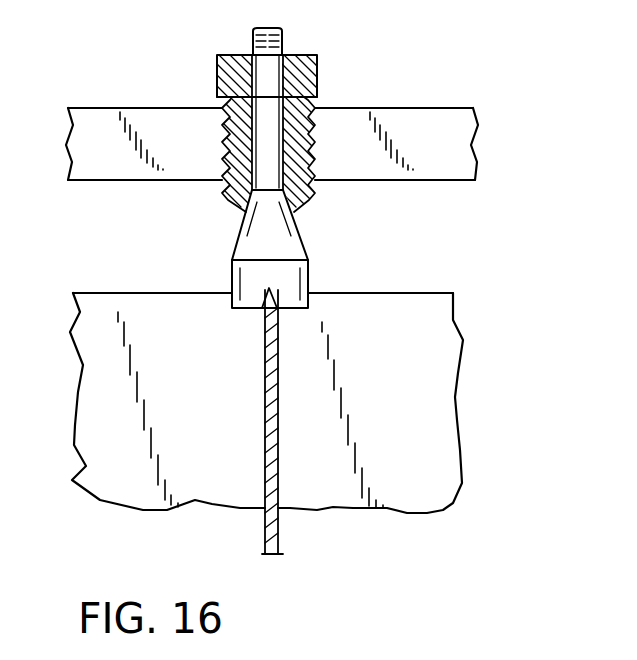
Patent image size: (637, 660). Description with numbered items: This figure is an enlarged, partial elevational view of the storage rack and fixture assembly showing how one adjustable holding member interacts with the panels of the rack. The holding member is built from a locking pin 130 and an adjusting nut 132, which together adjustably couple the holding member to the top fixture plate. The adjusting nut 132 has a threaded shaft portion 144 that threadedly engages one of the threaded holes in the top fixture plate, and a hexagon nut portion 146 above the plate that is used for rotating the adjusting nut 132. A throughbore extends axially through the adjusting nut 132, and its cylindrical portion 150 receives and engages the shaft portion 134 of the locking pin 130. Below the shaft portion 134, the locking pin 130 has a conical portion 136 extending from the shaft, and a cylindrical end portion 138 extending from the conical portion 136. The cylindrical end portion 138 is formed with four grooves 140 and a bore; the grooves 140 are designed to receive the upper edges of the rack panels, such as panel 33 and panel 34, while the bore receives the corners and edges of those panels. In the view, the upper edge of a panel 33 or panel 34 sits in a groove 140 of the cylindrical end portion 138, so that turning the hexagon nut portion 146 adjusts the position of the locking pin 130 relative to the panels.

The panel 33 is at (153, 292).
The panel 34 is at (437, 292).
The locking pin 130 is at (266, 179).
The adjusting nut 132 is at (210, 68).
The shaft portion 134 is at (251, 34).
The conical portion 136 is at (300, 236).
The cylindrical end portion 138 is at (316, 306).
The groove 140 is at (264, 305).
The threaded shaft portion 144 is at (228, 194).
The hexagon nut portion 146 is at (318, 66).
The cylindrical portion 150 is at (276, 70).